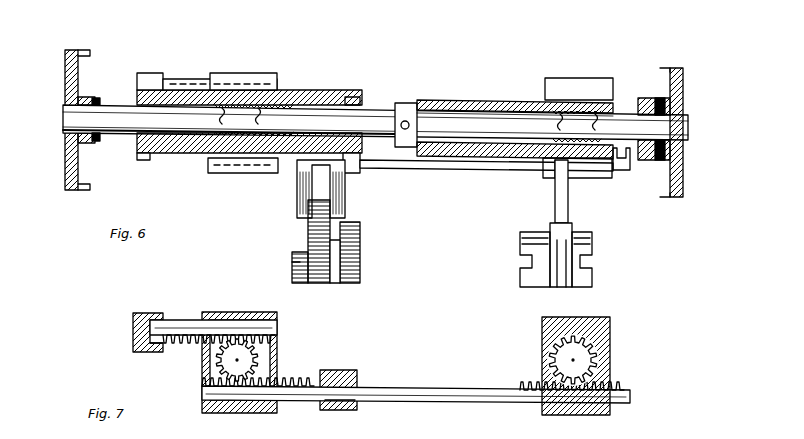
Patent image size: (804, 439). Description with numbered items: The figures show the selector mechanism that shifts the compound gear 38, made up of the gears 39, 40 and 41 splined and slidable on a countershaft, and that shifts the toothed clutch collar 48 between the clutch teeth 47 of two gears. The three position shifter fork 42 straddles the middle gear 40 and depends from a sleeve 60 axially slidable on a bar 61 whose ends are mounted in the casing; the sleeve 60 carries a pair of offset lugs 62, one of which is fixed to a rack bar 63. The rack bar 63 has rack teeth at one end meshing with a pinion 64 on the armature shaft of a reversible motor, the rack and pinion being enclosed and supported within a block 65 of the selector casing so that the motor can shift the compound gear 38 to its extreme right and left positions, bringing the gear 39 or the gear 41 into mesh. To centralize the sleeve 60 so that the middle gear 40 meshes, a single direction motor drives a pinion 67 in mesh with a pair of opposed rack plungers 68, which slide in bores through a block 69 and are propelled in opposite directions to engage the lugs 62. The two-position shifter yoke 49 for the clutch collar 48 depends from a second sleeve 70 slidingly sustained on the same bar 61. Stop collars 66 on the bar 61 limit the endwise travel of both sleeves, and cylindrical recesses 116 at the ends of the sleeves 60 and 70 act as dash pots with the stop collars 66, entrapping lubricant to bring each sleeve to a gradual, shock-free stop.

In FIG. 6, the compound gear 38 is at (290, 266).
In FIG. 6, the gear 39 is at (300, 283).
In FIG. 6, the middle gear 40 is at (321, 283).
In FIG. 6, the gear 41 is at (350, 283).
In FIG. 6, the three position shifter fork 42 is at (335, 195).
In FIG. 6, the clutch teeth 47 is at (537, 240).
In FIG. 6, the toothed clutch collar 48 is at (580, 262).
In FIG. 6, the two-position shifter yoke 49 is at (566, 212).
In FIG. 6, the sleeve 60 is at (312, 90).
In FIG. 6, the bar 61 is at (372, 108).
In FIG. 6, the lugs 62 is at (148, 73).
In FIG. 7, the lugs 62 is at (150, 313).
In FIG. 6, the rack bar 63 is at (436, 171).
In FIG. 7, the rack bar 63 is at (421, 386).
In FIG. 6, the pinion 64 is at (585, 100).
In FIG. 7, the pinion 64 is at (585, 360).
In FIG. 6, the block 65 is at (562, 78).
In FIG. 7, the block 65 is at (611, 324).
In FIG. 6, the stop collars 66 is at (97, 98).
In FIG. 6, the pinion 67 is at (275, 108).
In FIG. 7, the pinion 67 is at (218, 362).
In FIG. 6, the rack plungers 68 is at (188, 79).
In FIG. 7, the rack plungers 68 is at (181, 320).
In FIG. 6, the block 69 is at (237, 73).
In FIG. 7, the block 69 is at (235, 312).
In FIG. 6, the sleeve 70 is at (480, 100).
In FIG. 6, the cylindrical recesses 116 is at (352, 97).
In FIG. 7, the cylindrical recesses 116 is at (153, 352).